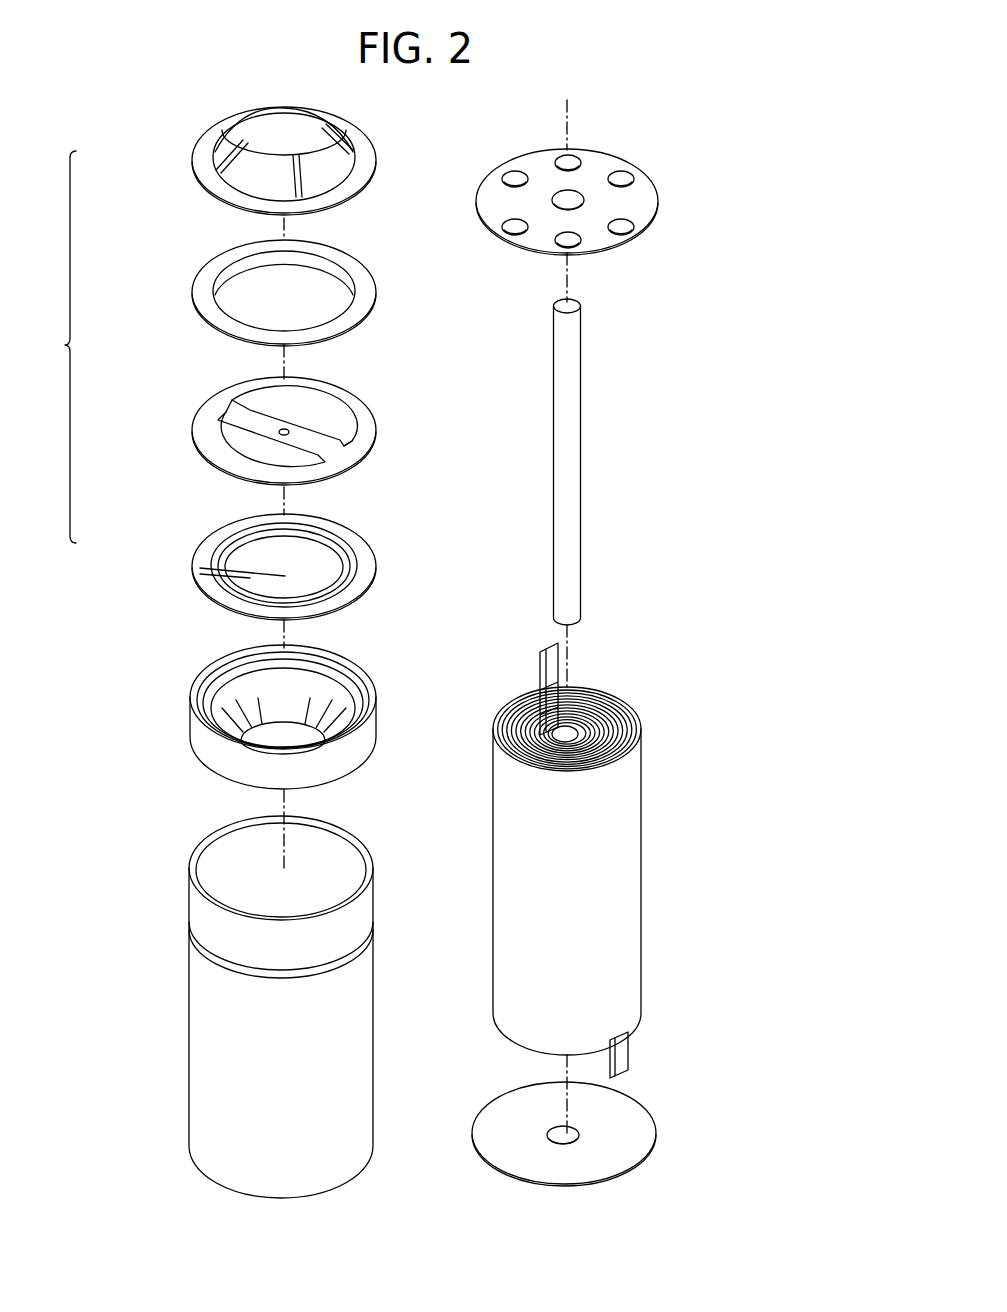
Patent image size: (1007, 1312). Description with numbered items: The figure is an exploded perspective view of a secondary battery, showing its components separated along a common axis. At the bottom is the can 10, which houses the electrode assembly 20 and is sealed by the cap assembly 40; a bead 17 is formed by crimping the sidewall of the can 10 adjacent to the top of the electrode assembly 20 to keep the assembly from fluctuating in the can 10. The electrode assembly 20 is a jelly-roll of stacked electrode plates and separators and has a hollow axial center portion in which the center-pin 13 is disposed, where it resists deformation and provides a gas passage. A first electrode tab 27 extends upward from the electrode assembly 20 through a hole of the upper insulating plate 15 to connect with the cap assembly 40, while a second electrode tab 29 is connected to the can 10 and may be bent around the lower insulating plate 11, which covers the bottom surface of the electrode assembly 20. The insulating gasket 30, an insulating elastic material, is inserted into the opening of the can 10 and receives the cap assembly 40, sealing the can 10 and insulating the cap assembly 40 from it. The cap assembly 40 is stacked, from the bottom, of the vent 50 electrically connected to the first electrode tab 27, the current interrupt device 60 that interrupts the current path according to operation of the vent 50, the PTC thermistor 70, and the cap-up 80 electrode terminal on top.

The can 10 is at (205, 1048).
The lower insulating plate 11 is at (620, 1125).
The center-pin 13 is at (576, 465).
The upper insulating plate 15 is at (648, 198).
The bead 17 is at (200, 944).
The electrode assembly 20 is at (612, 885).
The first electrode tab 27 is at (540, 650).
The second electrode tab 29 is at (622, 1055).
The insulating gasket 30 is at (203, 736).
The cap assembly 40 is at (58, 347).
The vent 50 is at (200, 570).
The current interrupt device 60 is at (203, 411).
The PTC thermistor 70 is at (203, 291).
The cap-up 80 is at (203, 163).